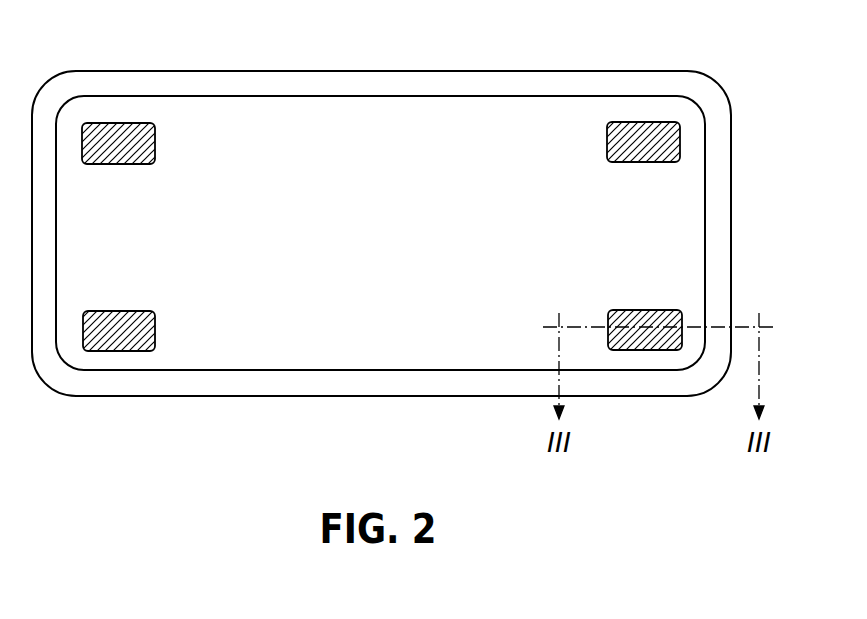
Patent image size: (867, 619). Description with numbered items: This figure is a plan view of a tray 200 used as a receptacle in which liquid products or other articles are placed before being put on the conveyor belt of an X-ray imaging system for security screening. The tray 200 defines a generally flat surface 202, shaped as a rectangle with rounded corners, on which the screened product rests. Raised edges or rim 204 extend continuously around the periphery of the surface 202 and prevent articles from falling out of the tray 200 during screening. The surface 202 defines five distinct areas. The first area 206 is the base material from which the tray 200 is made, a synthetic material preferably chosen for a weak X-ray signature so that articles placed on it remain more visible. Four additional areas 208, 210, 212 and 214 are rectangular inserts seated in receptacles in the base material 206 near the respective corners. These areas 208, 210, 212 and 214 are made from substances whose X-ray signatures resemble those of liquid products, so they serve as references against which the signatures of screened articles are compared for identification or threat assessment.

The tray 200 is at (690, 232).
The surface 202 is at (601, 252).
The raised edges or rim 204 is at (712, 193).
The first area 206 is at (395, 184).
The area 208 is at (155, 143).
The area 210 is at (155, 338).
The area 212 is at (607, 140).
The area 214 is at (653, 310).